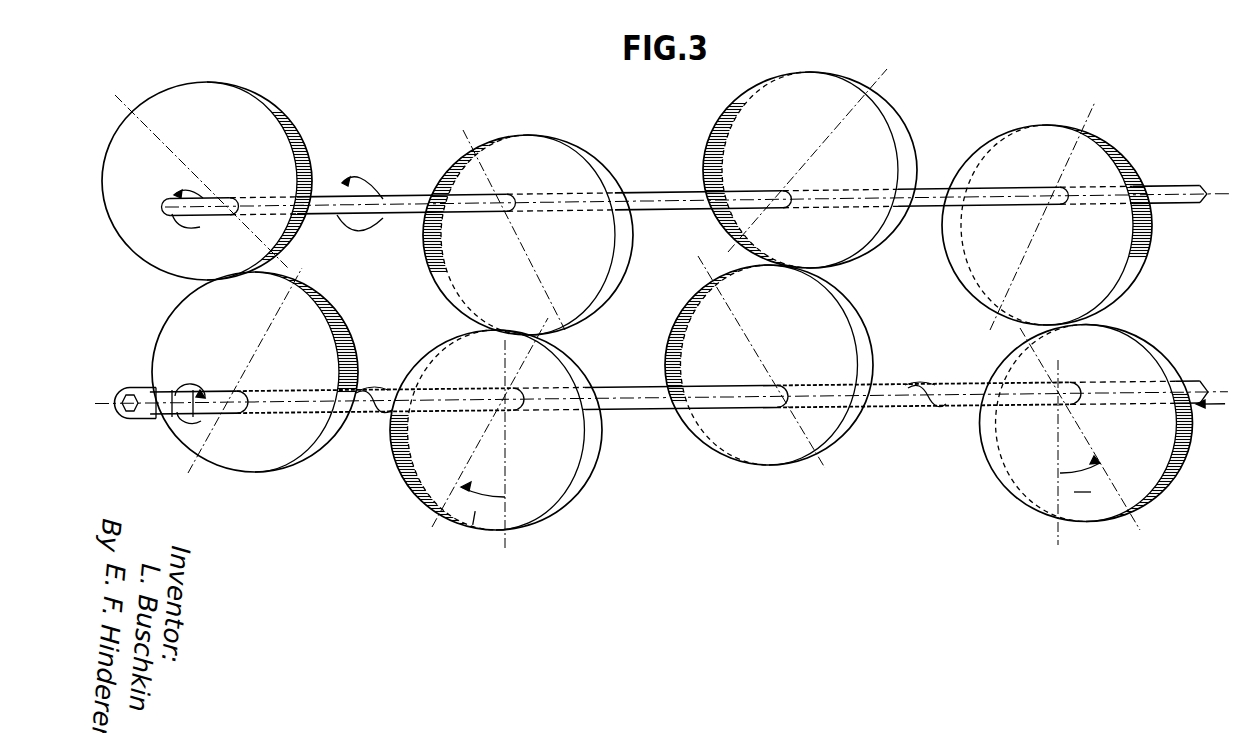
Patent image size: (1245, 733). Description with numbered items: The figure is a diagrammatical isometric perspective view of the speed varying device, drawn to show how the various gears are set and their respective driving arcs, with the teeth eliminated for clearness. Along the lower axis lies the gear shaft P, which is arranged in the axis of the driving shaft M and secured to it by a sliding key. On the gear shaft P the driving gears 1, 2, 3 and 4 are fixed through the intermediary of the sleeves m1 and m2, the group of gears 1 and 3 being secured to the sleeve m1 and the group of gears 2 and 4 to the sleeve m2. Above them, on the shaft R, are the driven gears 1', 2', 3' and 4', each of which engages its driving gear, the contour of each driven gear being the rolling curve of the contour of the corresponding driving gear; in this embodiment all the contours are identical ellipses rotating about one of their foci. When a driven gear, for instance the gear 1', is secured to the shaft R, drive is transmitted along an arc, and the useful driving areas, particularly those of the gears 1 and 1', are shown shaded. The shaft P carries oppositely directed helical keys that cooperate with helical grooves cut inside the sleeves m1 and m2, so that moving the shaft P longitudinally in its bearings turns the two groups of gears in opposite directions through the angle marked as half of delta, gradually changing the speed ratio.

The driven gear 1' is at (207, 156).
The driven gear 3' is at (528, 184).
The driven gear 2' is at (810, 147).
The driven gear 4' is at (1047, 194).
The driving gear 1 is at (255, 402).
The driving gear 3 is at (498, 433).
The driving gear 2 is at (769, 390).
The driving gear 4 is at (1074, 435).
The shaft R is at (170, 216).
The gear shaft P is at (655, 412).
The driving shaft M is at (160, 420).
The sleeve m1 is at (378, 418).
The sleeve m2 is at (932, 410).